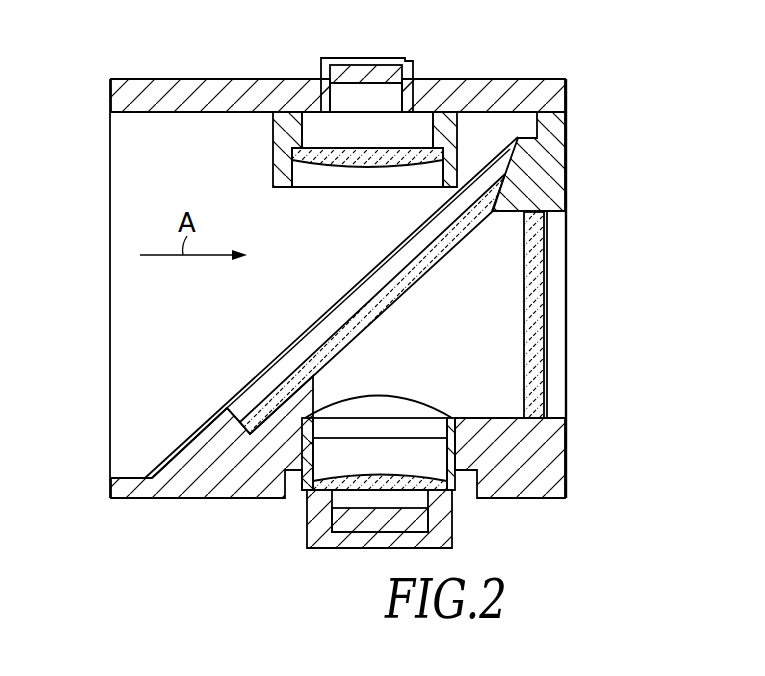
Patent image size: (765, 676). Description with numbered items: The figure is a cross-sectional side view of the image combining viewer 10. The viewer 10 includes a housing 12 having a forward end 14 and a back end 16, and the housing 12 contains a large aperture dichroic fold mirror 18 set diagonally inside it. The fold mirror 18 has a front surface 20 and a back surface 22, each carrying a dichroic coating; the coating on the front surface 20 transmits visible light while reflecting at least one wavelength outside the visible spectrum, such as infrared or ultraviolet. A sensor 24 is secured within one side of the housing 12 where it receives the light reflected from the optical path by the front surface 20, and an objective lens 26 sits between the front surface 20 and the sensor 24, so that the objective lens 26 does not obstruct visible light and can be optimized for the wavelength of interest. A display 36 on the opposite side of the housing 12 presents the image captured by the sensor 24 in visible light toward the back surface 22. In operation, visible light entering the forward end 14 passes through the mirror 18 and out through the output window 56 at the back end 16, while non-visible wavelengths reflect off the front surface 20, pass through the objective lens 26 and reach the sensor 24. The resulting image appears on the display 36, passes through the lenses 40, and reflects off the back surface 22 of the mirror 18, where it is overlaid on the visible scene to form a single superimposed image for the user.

The image combining viewer 10 is at (617, 400).
The housing 12 is at (167, 83).
The forward end 14 is at (110, 133).
The back end 16 is at (565, 460).
The dichroic fold mirror 18 is at (365, 303).
The front surface 20 is at (392, 280).
The back surface 22 is at (398, 294).
The sensor 24 is at (362, 65).
The objective lens 26 is at (342, 148).
The display 36 is at (348, 548).
The lenses 40 is at (378, 473).
The output window 56 is at (540, 278).